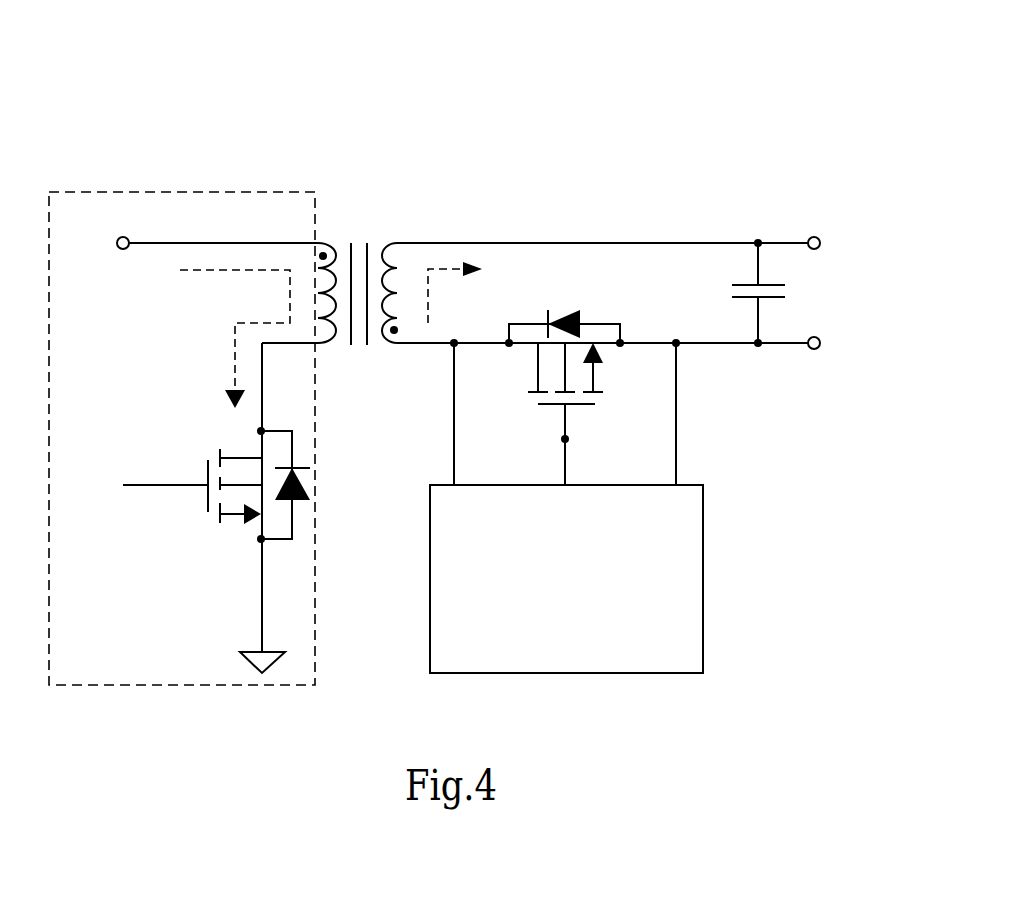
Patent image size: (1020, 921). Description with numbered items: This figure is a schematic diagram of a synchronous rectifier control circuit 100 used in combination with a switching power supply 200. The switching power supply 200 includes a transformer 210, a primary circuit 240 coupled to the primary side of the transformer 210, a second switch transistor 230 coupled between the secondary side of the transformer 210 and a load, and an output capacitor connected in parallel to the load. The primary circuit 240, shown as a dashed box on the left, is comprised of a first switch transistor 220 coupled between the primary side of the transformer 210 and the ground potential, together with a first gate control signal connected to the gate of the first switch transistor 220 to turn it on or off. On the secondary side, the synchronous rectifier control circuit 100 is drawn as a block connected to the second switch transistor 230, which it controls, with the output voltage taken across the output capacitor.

The synchronous rectifier control circuit 100 is at (707, 578).
The switching power supply 200 is at (497, 128).
The transformer 210 is at (360, 248).
The first switch transistor 220 is at (207, 503).
The second switch transistor 230 is at (547, 405).
The primary circuit 240 is at (182, 192).